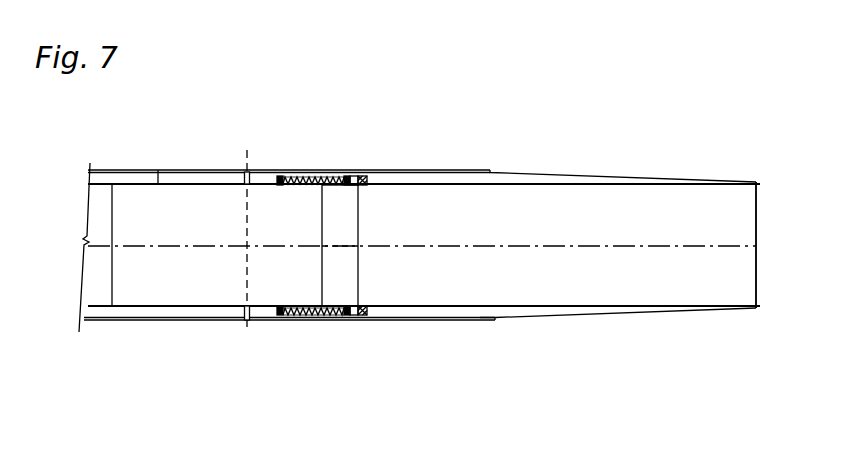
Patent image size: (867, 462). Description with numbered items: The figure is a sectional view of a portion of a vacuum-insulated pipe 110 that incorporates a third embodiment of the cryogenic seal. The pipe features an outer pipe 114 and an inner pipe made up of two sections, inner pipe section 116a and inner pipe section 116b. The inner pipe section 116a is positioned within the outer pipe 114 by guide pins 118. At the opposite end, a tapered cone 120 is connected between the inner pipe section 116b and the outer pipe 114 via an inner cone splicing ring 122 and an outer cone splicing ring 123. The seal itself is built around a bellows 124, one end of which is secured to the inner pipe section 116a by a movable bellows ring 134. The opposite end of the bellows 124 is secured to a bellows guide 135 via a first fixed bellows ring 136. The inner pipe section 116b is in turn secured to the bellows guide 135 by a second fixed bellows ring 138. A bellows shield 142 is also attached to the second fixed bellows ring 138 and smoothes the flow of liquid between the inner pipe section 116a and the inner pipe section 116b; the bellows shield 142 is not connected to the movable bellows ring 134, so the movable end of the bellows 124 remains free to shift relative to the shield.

The portion of vacuum-insulated pipe 110 is at (446, 77).
The outer pipe 114 is at (112, 184).
The inner pipe section 116a is at (158, 170).
The inner pipe section 116b is at (553, 185).
The guide pins 118 is at (247, 320).
The tapered cone 120 is at (657, 312).
The inner cone splicing ring 122 is at (752, 310).
The outer cone splicing ring 123 is at (498, 319).
The bellows 124 is at (318, 306).
The movable bellows ring 134 is at (347, 178).
The bellows guide 135 is at (295, 176).
The first fixed bellows ring 136 is at (277, 176).
The second fixed bellows ring 138 is at (357, 318).
The bellows shield 142 is at (340, 267).